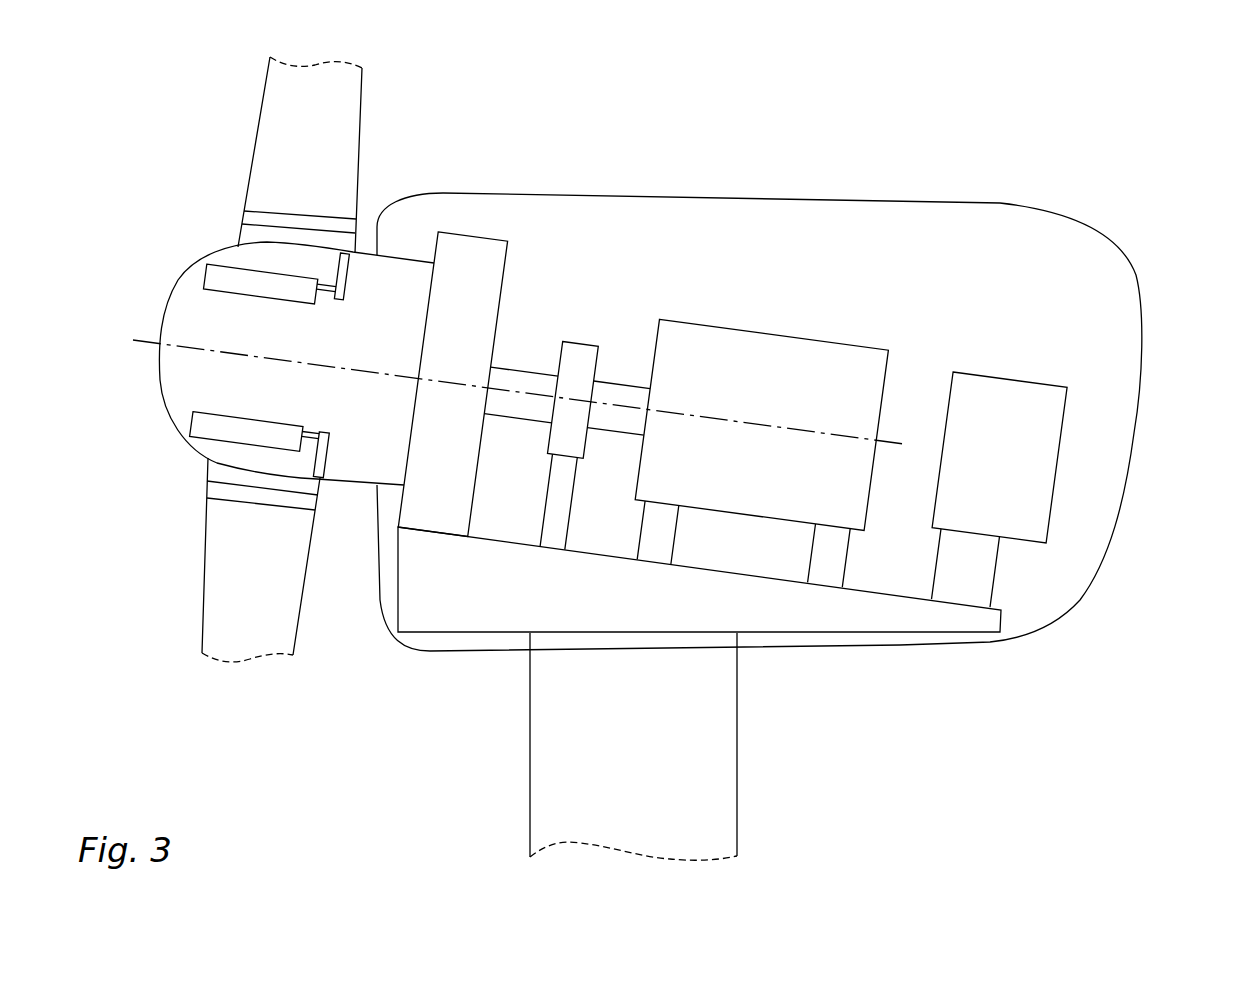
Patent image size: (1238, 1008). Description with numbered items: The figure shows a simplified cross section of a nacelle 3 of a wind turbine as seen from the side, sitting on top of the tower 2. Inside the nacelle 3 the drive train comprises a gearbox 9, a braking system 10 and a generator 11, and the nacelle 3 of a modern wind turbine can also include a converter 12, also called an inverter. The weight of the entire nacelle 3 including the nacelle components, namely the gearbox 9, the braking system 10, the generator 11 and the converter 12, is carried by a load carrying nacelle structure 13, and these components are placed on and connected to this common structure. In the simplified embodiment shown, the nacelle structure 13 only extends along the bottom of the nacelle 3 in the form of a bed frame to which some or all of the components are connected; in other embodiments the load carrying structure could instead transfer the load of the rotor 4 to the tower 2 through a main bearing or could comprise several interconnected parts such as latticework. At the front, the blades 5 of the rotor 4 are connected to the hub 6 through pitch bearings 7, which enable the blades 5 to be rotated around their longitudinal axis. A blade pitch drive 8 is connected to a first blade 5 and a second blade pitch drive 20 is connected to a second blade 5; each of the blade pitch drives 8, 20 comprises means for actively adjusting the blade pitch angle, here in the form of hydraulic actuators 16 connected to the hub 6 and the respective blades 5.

The tower 2 is at (709, 817).
The nacelle 3 is at (1185, 214).
The rotor 4 is at (190, 130).
The blades 5 is at (325, 147).
The hub 6 is at (243, 258).
The pitch bearings 7 is at (233, 493).
The blade pitch drive 8 is at (205, 306).
The gearbox 9 is at (470, 267).
The braking system 10 is at (580, 363).
The generator 11 is at (725, 375).
The converter 12 is at (1019, 425).
The nacelle structure 13 is at (827, 608).
The hydraulic actuators 16 is at (218, 279).
The second blade pitch drive 20 is at (195, 394).